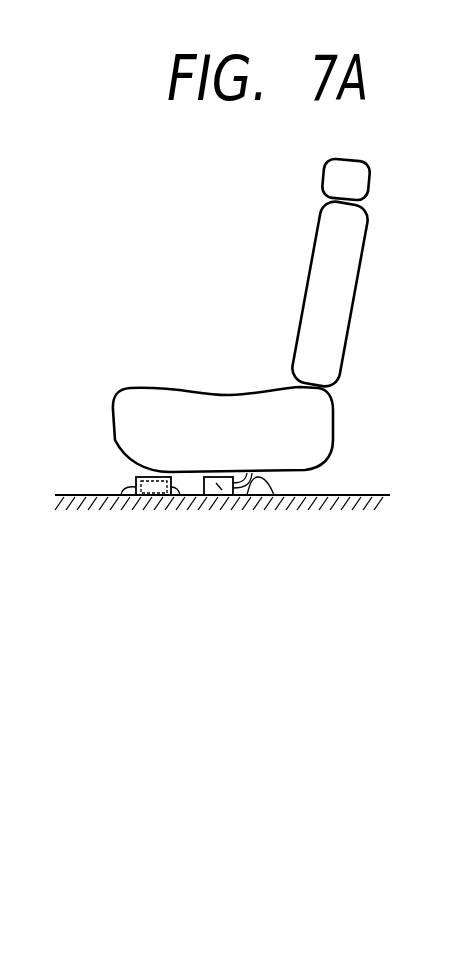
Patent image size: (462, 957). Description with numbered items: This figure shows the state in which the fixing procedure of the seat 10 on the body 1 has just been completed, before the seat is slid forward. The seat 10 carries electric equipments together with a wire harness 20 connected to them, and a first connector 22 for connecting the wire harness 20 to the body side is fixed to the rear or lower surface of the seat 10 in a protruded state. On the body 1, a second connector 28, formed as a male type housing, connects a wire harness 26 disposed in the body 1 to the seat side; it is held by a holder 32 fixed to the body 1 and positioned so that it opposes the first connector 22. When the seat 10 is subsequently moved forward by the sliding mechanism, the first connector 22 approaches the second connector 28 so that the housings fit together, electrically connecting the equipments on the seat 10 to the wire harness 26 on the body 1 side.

The body 1 is at (76, 474).
The seat 10 is at (364, 354).
The wire harness 20 is at (263, 500).
The first connector 22 is at (228, 497).
The wire harness 26 is at (133, 497).
The second connector 28 is at (152, 497).
The holder 32 is at (178, 497).